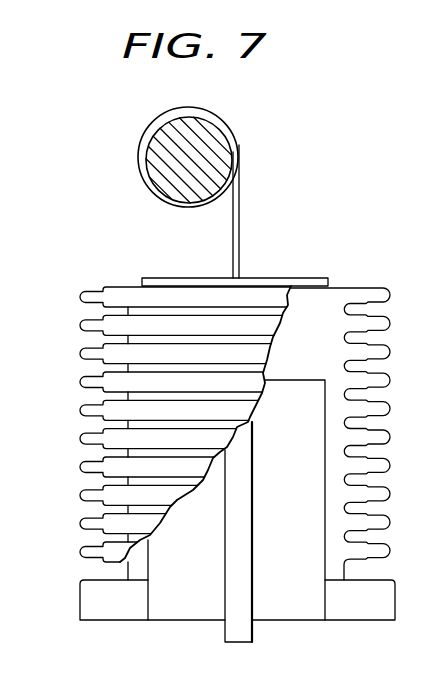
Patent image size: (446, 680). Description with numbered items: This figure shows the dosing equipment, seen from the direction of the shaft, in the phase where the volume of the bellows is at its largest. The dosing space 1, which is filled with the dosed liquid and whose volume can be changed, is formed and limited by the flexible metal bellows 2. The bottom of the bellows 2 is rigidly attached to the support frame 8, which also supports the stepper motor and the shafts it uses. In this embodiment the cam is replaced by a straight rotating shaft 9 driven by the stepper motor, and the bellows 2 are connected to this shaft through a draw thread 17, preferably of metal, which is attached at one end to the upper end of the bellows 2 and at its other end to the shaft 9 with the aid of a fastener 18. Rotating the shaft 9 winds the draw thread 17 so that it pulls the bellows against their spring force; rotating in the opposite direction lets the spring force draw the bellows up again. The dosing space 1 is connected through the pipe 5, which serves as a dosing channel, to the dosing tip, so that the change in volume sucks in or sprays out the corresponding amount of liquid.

The dosing space 1 is at (355, 291).
The flexible metal bellows 2 is at (80, 410).
The pipe 5 is at (228, 628).
The support frame 8 is at (90, 601).
The shaft 9 is at (223, 157).
The draw thread 17 is at (237, 227).
The fastener 18 is at (153, 197).